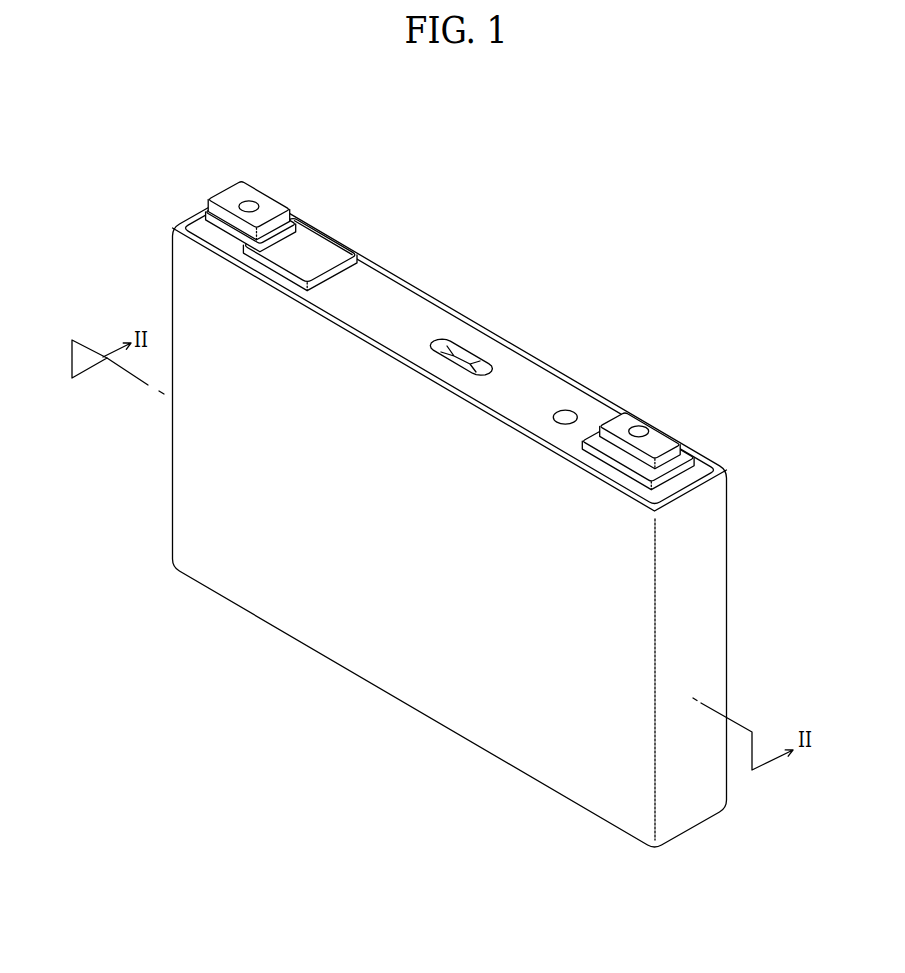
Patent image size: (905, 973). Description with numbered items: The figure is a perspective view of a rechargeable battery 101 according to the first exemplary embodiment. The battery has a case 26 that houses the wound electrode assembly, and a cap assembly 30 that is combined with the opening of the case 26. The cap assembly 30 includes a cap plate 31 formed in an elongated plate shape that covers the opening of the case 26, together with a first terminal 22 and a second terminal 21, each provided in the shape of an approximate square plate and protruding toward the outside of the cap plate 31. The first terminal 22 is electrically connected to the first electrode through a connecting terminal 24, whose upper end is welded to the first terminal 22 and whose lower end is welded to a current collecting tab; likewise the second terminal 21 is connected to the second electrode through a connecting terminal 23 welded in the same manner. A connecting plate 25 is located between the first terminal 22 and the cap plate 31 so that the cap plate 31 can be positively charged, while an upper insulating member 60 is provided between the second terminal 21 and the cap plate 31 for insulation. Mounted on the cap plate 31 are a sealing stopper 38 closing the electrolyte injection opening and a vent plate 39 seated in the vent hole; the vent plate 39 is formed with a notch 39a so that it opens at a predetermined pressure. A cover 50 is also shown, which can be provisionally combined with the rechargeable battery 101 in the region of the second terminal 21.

The rechargeable battery 101 is at (474, 141).
The second terminal 21 is at (227, 196).
The first terminal 22 is at (667, 438).
The connecting terminal 23 is at (248, 202).
The connecting terminal 24 is at (638, 427).
The connecting plate 25 is at (688, 444).
The case 26 is at (363, 645).
The cap assembly 30 is at (546, 363).
The cap plate 31 is at (393, 302).
The sealing stopper 38 is at (566, 410).
The vent plate 39 is at (452, 348).
The notch 39a is at (470, 367).
The cover 50 is at (307, 242).
The upper insulating member 60 is at (347, 265).